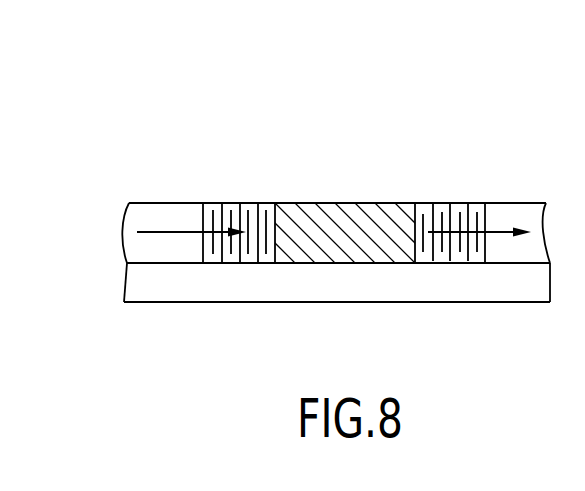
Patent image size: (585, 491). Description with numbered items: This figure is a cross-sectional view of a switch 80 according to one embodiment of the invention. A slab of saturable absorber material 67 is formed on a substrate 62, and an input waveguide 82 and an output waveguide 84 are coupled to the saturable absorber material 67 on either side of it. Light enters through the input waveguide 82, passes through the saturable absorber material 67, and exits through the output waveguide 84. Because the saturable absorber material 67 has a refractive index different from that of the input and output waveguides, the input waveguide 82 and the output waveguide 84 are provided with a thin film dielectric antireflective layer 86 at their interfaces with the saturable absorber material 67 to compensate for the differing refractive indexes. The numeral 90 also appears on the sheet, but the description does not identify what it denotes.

The switch 80 is at (494, 151).
The substrate 62 is at (217, 288).
The input waveguide 82 is at (139, 253).
The output waveguide 84 is at (534, 205).
The thin film dielectric antireflective layer 86 is at (263, 206).
The saturable absorber material 67 is at (353, 260).
The reference numeral 90 is at (58, 490).